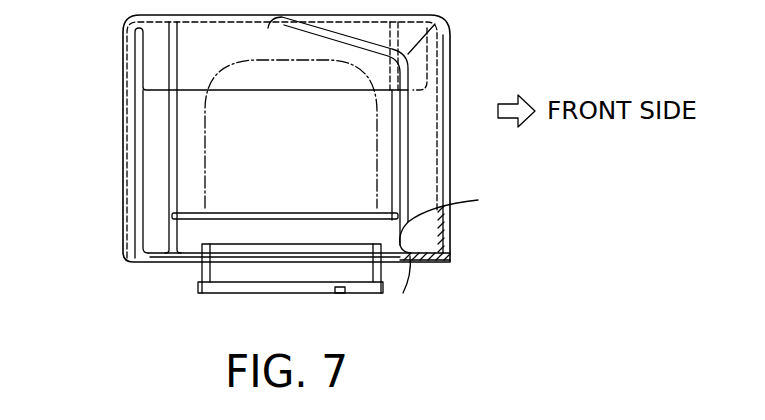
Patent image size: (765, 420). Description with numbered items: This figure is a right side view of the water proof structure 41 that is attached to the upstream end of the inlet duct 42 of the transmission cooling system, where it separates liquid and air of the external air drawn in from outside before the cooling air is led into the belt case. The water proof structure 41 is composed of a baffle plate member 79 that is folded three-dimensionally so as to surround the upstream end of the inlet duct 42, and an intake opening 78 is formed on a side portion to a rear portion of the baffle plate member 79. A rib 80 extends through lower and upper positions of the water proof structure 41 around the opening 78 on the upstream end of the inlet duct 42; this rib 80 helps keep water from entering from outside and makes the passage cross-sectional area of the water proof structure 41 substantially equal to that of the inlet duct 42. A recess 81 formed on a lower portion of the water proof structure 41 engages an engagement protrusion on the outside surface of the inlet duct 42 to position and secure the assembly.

The water proof structure 41 is at (118, 46).
The inlet duct 42 is at (205, 147).
The intake opening 78 is at (243, 182).
The baffle plate member 79 is at (451, 165).
The rib 80 is at (190, 67).
The recess 81 is at (343, 293).